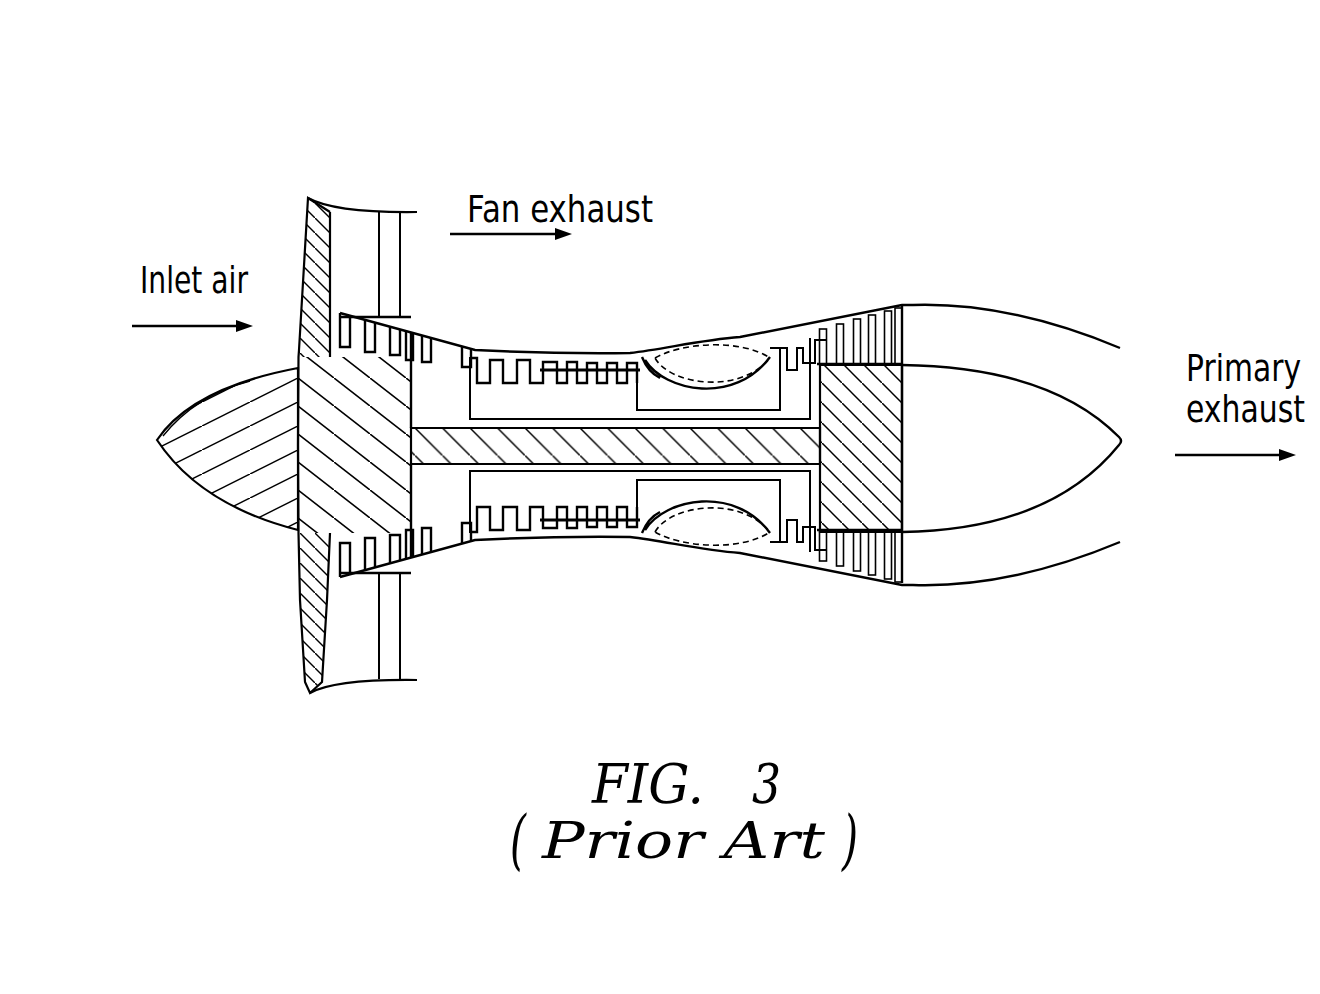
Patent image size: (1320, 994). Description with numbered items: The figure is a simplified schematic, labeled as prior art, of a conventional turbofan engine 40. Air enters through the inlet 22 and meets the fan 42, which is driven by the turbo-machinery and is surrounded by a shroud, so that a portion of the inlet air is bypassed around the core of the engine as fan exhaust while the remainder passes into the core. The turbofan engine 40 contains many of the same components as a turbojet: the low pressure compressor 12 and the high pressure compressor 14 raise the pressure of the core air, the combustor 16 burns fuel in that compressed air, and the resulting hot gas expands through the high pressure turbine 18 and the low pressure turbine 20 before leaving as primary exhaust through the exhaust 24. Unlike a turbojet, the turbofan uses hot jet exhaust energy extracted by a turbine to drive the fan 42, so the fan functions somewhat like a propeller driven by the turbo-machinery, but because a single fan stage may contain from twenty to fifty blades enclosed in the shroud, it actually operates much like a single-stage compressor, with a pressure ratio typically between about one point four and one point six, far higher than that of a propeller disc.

The turbofan engine 40 is at (991, 82).
The fan 42 is at (299, 623).
The inlet 22 is at (158, 512).
The low pressure compressor 12 is at (414, 330).
The high pressure compressor 14 is at (488, 537).
The combustor 16 is at (716, 340).
The high pressure turbine 18 is at (782, 557).
The low pressure turbine 20 is at (863, 316).
The exhaust 24 is at (1188, 339).